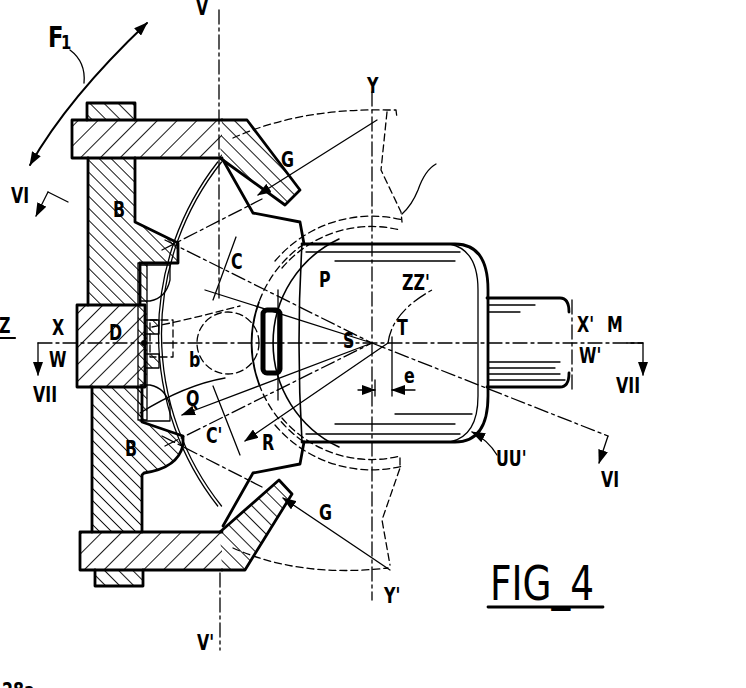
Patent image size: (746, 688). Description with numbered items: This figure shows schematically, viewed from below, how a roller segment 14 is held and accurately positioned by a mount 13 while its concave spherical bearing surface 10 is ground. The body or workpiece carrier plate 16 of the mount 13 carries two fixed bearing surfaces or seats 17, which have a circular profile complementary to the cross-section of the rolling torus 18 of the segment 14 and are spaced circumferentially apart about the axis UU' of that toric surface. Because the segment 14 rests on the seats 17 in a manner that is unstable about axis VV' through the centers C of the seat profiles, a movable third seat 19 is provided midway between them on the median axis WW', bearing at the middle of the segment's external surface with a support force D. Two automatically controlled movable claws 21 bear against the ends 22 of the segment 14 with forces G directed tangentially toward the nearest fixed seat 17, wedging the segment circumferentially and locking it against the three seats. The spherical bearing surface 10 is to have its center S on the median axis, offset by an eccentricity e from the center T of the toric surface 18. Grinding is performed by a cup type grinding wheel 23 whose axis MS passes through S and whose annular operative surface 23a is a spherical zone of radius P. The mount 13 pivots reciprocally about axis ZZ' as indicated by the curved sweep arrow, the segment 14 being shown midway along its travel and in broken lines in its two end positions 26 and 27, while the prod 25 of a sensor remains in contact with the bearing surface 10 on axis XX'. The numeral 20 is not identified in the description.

The concave spherical bearing surface 10 is at (280, 412).
The mount 13 is at (157, 587).
The segment 14 is at (175, 443).
The body or workpiece carrier plate 16 is at (124, 100).
The fixed bearing surfaces or seats 17 is at (104, 253).
The rolling torus 18 is at (112, 290).
The third seat 19 is at (140, 402).
The lower arm 20 is at (220, 483).
The movable claws 21 is at (230, 114).
The ends of the segment 22 is at (257, 185).
The cup type grinding wheel 23 is at (476, 236).
The annular operative surface 23a is at (422, 242).
The prod 25 is at (250, 288).
The end position 26 is at (343, 189).
The end position 27 is at (404, 460).